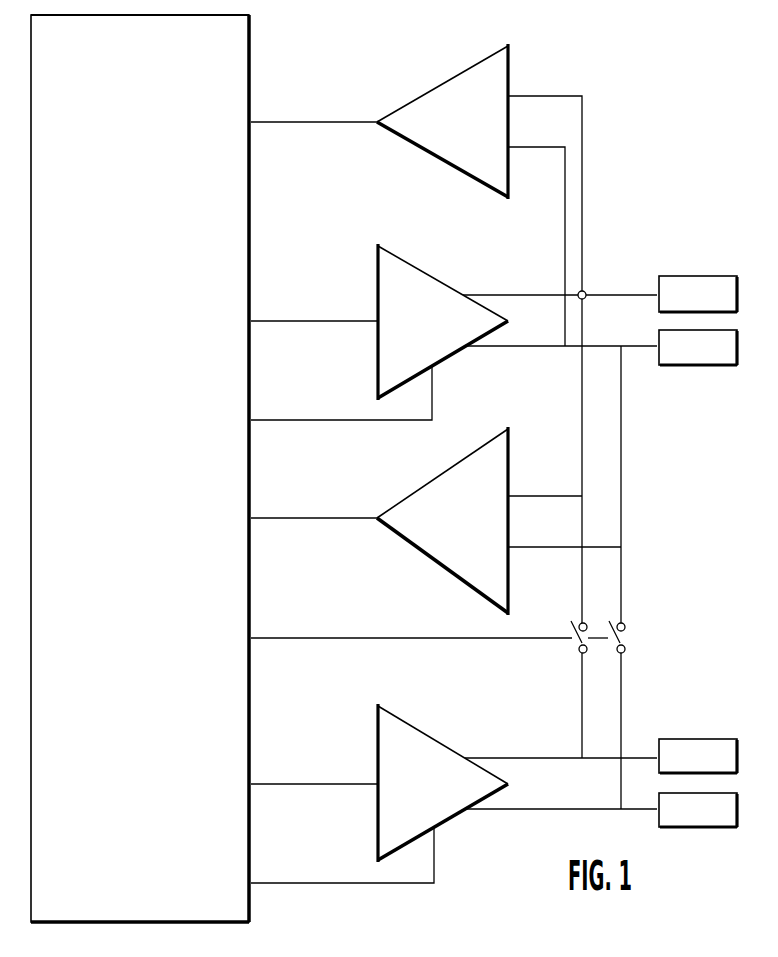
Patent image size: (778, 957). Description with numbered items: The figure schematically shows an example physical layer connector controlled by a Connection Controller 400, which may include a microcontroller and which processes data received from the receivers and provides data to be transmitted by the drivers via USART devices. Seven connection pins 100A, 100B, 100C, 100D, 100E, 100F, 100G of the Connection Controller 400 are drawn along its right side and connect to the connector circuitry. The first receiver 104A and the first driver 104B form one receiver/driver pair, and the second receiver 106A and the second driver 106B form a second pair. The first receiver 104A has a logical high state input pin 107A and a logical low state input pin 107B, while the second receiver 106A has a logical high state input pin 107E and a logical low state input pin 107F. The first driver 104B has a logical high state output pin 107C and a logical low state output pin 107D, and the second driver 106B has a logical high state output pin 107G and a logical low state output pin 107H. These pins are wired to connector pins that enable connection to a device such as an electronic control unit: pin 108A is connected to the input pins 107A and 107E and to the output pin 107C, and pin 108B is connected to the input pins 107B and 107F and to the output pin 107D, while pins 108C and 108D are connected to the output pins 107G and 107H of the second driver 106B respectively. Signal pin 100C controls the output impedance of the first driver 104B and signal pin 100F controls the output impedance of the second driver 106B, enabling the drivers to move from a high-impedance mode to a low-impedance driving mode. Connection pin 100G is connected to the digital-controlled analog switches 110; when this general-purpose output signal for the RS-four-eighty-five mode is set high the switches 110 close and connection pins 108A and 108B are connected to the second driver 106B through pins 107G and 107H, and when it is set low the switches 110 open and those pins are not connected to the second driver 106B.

The Connection Controller 400 is at (164, 88).
The connection pin 100A is at (226, 120).
The connection pin 100B is at (228, 321).
The connection pin 100C is at (259, 401).
The connection pin 100D is at (227, 518).
The connection pin 100E is at (224, 783).
The connection pin 100F is at (259, 863).
The connection pin 100G is at (319, 638).
The first receiver 104A is at (488, 128).
The first driver 104B is at (438, 333).
The second receiver 106A is at (488, 525).
The second driver 106B is at (434, 796).
The logical high state input pin 107A is at (545, 181).
The logical low state input pin 107B is at (536, 233).
The logical high state output pin 107C is at (559, 445).
The logical low state output pin 107D is at (561, 472).
The logical high state input pin 107E is at (545, 481).
The logical low state input pin 107F is at (564, 546).
The logical high state output pin 107G is at (561, 706).
The logical low state output pin 107H is at (561, 745).
The connection pin 108A is at (733, 307).
The connection pin 108B is at (733, 360).
The connection pin 108C is at (733, 771).
The connection pin 108D is at (733, 825).
The digital-controlled analog switches 110 is at (578, 632).